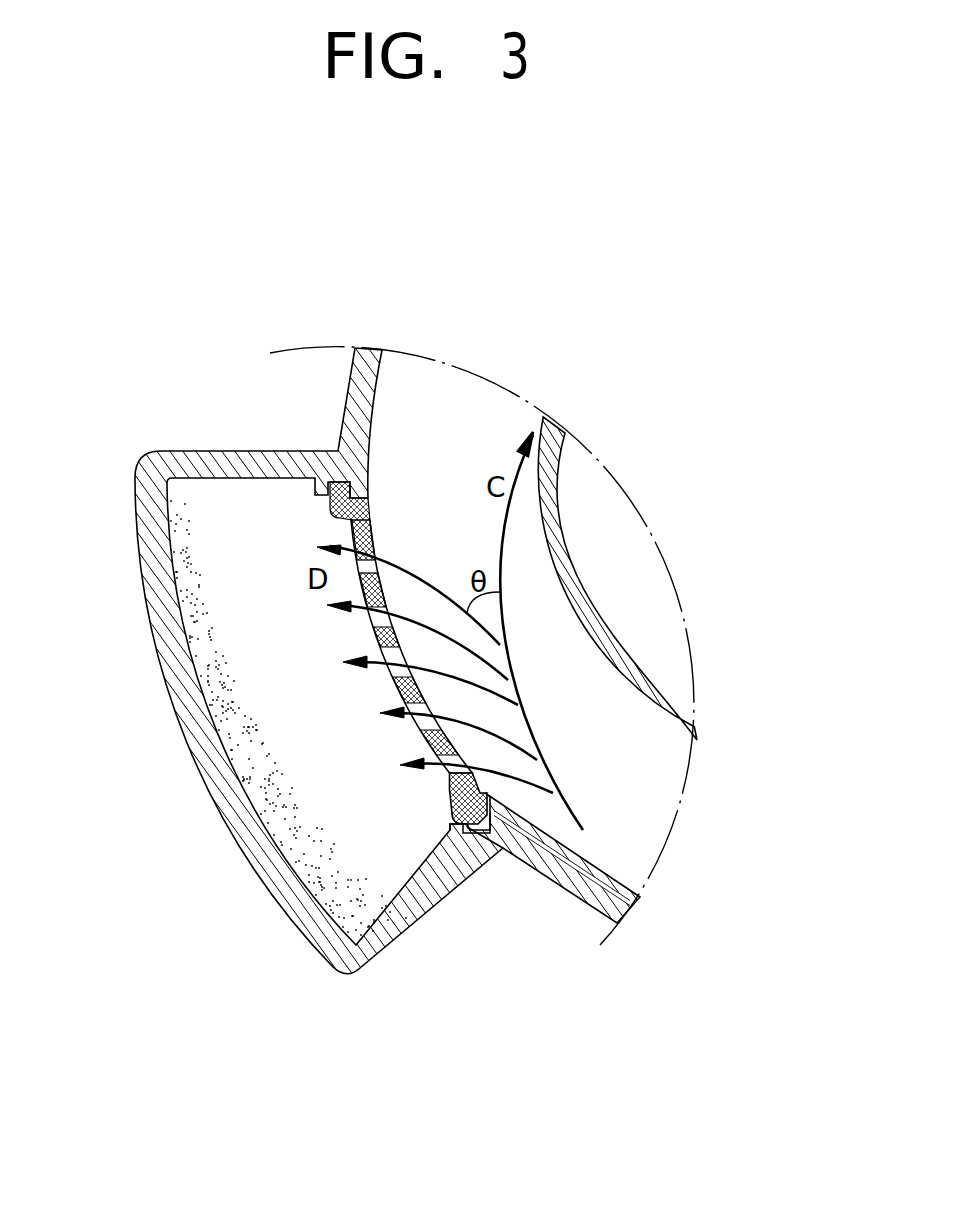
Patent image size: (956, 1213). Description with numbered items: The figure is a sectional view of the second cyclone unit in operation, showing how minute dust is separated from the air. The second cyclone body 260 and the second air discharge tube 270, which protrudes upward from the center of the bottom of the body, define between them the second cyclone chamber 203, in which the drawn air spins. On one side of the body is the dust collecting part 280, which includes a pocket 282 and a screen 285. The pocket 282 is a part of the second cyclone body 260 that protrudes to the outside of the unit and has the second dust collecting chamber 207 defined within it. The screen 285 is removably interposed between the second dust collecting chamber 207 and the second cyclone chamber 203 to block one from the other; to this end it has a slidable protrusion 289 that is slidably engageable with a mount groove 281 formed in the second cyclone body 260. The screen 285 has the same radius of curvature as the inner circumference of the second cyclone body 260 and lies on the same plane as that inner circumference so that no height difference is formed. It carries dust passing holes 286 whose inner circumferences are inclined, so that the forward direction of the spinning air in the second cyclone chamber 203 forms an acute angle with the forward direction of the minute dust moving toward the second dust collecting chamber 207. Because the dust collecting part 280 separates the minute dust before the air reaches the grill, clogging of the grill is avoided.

The second cyclone chamber 203 is at (632, 783).
The second cyclone body 260 is at (373, 405).
The second air discharge tube 270 is at (567, 593).
The dust collecting part 280 is at (303, 933).
The mount groove 281 is at (450, 822).
The pocket 282 is at (173, 660).
The screen 285 is at (413, 733).
The dust passing holes 286 is at (363, 610).
The slidable protrusion 289 is at (466, 826).
The second dust collecting chamber 207 is at (262, 727).